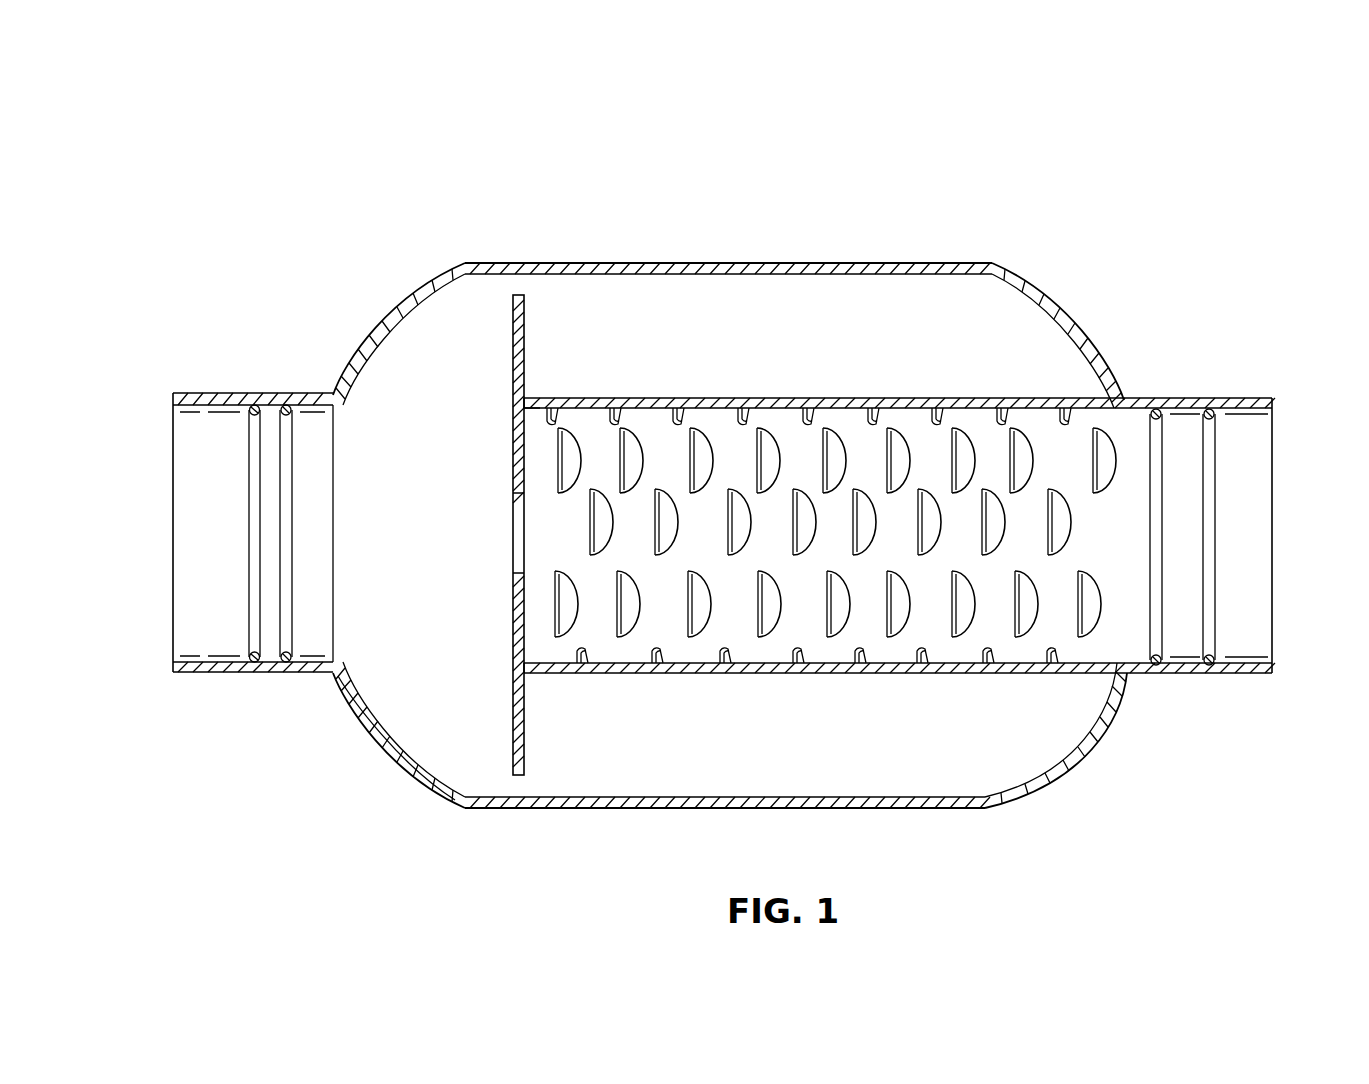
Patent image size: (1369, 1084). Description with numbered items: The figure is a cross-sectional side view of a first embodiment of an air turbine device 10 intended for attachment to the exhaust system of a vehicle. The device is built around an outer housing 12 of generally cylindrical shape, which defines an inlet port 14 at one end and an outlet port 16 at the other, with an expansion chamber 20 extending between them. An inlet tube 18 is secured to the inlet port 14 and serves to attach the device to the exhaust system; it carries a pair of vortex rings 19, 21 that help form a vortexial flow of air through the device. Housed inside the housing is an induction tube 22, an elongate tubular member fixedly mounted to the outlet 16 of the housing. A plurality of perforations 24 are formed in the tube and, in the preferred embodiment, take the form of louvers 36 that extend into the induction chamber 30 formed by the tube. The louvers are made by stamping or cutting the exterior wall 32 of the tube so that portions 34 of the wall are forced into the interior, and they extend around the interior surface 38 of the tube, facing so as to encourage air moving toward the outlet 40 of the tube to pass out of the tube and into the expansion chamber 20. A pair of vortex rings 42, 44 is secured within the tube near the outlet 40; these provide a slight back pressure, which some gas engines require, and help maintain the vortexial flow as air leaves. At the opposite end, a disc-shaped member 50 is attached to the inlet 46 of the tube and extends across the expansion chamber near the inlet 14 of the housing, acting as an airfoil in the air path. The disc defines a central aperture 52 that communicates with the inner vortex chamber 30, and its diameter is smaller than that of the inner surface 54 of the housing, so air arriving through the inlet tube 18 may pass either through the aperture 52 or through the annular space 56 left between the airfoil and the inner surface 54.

The air turbine device 10 is at (893, 213).
The outer housing 12 is at (580, 263).
The inlet port 14 is at (343, 546).
The outlet port 16 is at (1130, 675).
The inlet tube 18 is at (215, 676).
The vortex ring 19 is at (248, 546).
The expansion chamber 20 is at (700, 297).
The vortex ring 21 is at (292, 486).
The induction tube 22 is at (820, 398).
The perforations 24 is at (790, 515).
The induction chamber 30 is at (923, 630).
The exterior wall 32 is at (683, 672).
The portions of the wall 34 is at (742, 657).
The louvers 36 is at (768, 445).
The interior surface 38 is at (650, 403).
The outlet of the tube 40 is at (1268, 568).
The vortex ring 42 is at (1163, 487).
The vortex ring 44 is at (1217, 505).
The inlet of the tube 46 is at (530, 398).
The disc-shaped member 50 is at (513, 368).
The central aperture 52 is at (513, 538).
The inner surface of the housing 54 is at (445, 775).
The annular space 56 is at (517, 787).